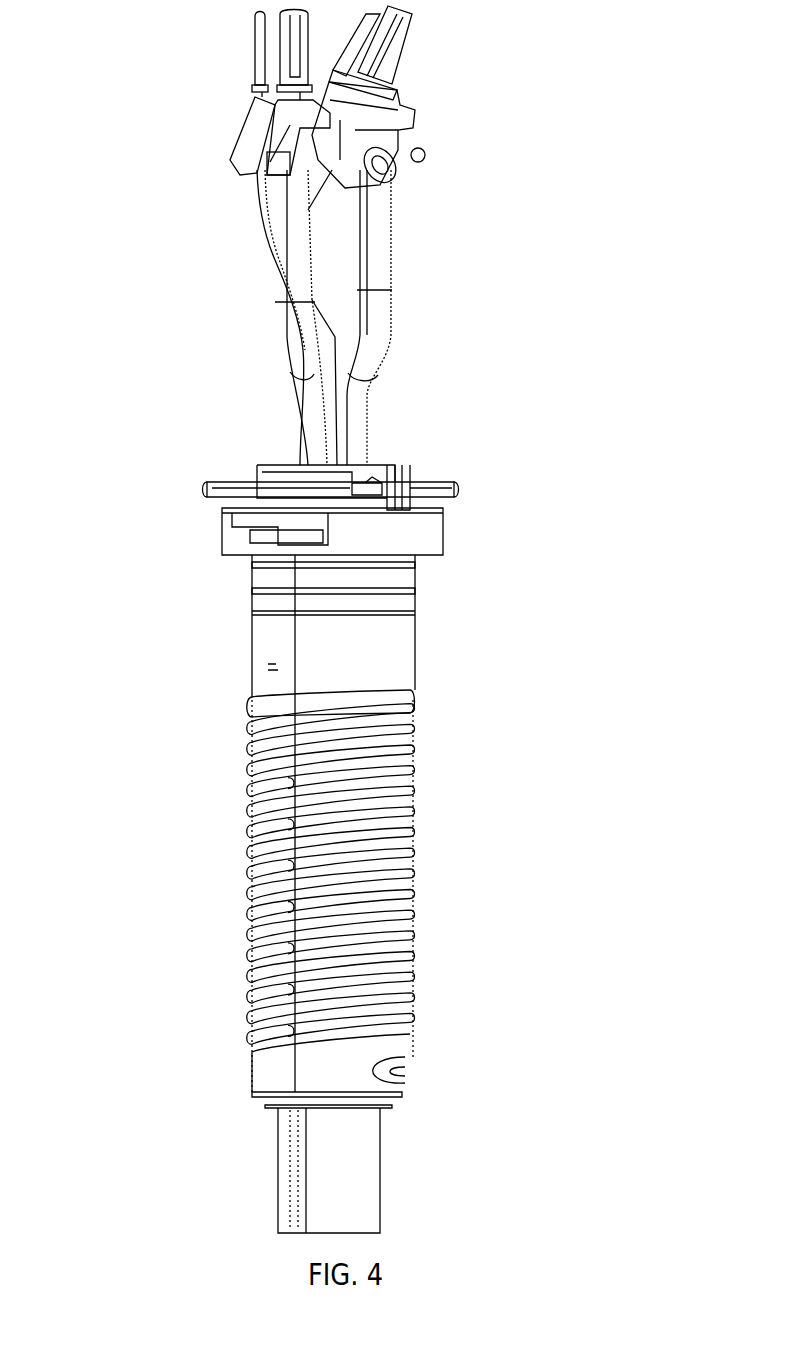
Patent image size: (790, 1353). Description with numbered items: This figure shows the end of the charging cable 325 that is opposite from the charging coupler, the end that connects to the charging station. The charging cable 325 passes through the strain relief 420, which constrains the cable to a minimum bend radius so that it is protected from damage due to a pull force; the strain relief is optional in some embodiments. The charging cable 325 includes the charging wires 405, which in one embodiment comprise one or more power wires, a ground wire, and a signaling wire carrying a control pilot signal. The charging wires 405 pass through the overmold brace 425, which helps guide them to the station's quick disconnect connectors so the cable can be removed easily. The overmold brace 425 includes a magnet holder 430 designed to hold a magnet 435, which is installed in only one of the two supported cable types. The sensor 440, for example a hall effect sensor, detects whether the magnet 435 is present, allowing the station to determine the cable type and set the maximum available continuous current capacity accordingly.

The charging cable 325 is at (360, 1150).
The charging wires 405 is at (350, 383).
The strain relief 420 is at (363, 917).
The overmold brace 425 is at (245, 165).
The magnet holder 430 is at (357, 178).
The magnet 435 is at (345, 152).
The sensor 440 is at (425, 158).